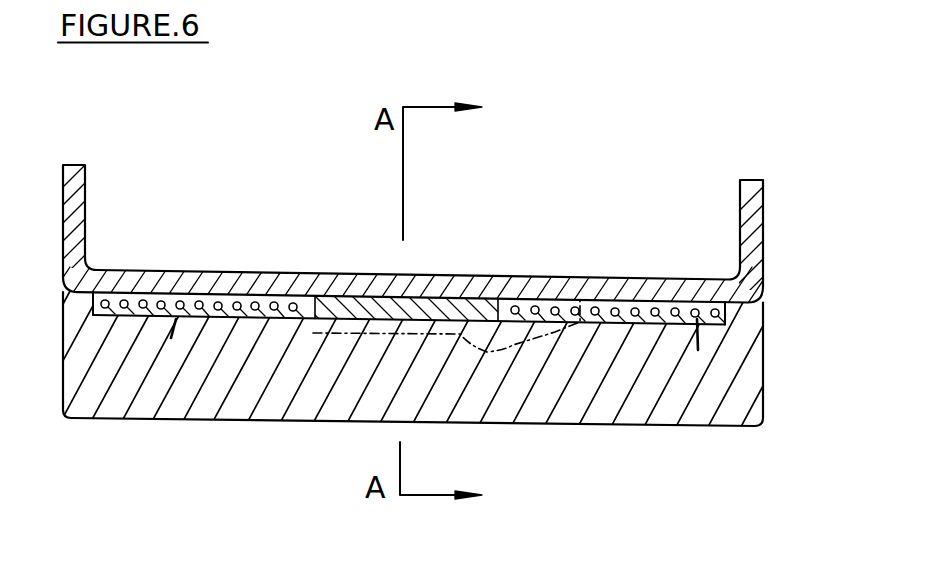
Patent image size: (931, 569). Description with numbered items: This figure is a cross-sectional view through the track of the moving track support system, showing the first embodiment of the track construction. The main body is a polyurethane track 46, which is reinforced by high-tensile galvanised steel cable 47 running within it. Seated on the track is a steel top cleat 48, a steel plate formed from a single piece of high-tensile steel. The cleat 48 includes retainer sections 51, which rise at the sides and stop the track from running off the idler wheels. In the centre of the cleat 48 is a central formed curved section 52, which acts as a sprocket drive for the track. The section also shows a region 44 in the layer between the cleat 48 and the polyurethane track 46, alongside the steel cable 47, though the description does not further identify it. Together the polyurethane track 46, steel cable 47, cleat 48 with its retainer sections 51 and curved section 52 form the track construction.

The spring layer 44 is at (736, 328).
The polyurethane track 46 is at (87, 377).
The high-tensile galvanised steel cable 47 is at (174, 325).
The steel top cleat 48 is at (75, 198).
The retainer section 51 is at (746, 203).
The central formed curved section 52 is at (585, 292).